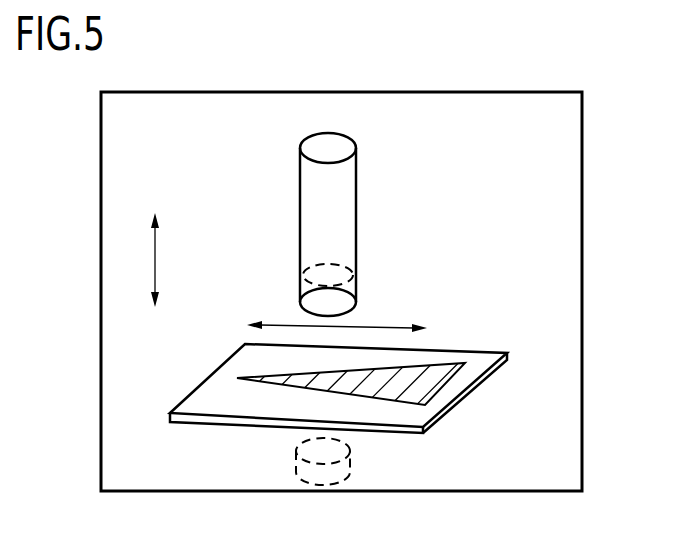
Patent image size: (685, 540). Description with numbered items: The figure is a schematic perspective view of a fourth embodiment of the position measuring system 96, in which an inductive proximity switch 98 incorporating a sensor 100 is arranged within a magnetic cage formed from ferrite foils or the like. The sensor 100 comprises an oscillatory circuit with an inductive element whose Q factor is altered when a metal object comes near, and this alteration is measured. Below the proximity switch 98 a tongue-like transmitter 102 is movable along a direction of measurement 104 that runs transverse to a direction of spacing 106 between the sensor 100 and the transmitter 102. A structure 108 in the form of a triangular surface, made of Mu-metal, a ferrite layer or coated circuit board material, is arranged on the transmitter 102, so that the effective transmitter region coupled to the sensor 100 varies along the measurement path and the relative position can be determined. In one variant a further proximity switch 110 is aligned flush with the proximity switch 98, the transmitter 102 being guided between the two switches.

The position measuring system 96 is at (560, 500).
The inductive proximity switch 98 is at (334, 175).
The sensor 100 is at (345, 293).
The transmitter 102 is at (212, 405).
The direction of measurement 104 is at (373, 326).
The direction of spacing 106 is at (153, 252).
The structure 108 is at (427, 380).
The further proximity switch 110 is at (350, 468).